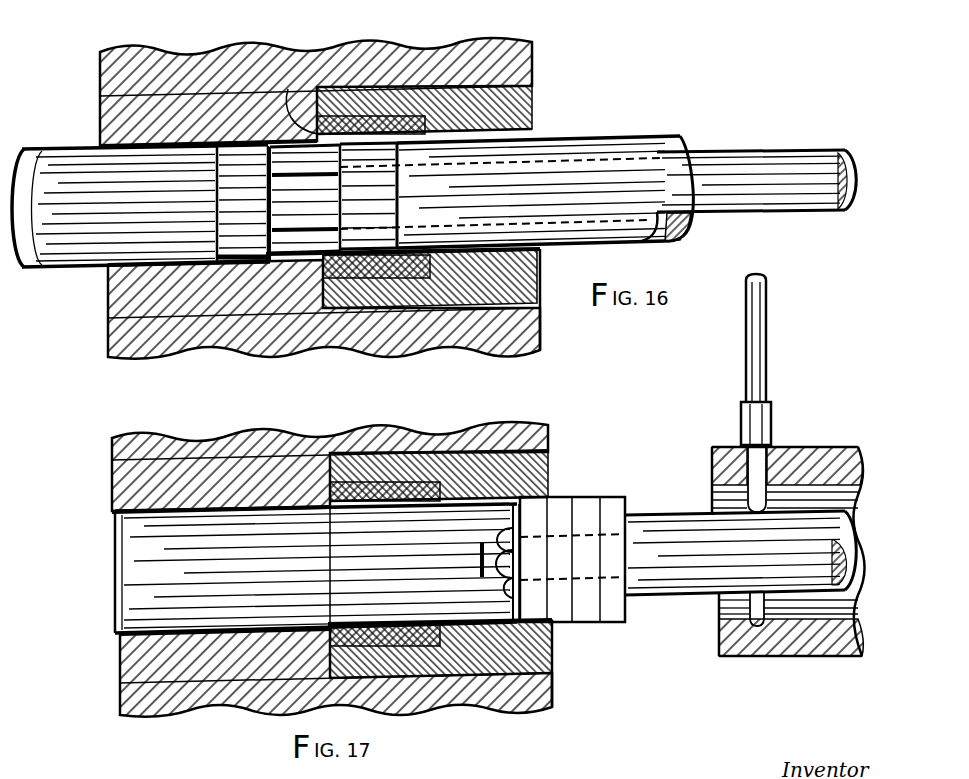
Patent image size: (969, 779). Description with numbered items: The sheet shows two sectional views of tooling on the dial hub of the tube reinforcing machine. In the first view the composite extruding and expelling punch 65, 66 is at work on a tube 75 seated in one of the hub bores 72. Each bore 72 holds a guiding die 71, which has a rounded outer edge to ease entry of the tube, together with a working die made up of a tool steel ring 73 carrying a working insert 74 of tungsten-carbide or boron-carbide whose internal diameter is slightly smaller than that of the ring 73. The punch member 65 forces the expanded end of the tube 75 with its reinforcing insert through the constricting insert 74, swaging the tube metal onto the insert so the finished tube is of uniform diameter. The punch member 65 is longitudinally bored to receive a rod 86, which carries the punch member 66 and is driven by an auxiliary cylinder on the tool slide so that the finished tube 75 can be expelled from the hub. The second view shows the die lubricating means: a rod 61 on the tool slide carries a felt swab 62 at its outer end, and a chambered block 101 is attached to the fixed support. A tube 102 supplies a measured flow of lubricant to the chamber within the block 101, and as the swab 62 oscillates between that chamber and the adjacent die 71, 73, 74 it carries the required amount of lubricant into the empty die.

In FIG. 17, the rod 61 is at (690, 515).
In FIG. 17, the die lubricating swab 62 is at (583, 503).
In FIG. 16, the punch member 65 is at (650, 140).
In FIG. 16, the punch member 66 is at (230, 230).
In FIG. 16, the guiding die 71 is at (236, 92).
In FIG. 17, the guiding die 71 is at (108, 483).
In FIG. 16, the bore 72 is at (421, 87).
In FIG. 17, the bore 72 is at (416, 456).
In FIG. 16, the tool steel ring 73 is at (533, 105).
In FIG. 17, the tool steel ring 73 is at (540, 465).
In FIG. 16, the working insert 74 is at (298, 62).
In FIG. 17, the working insert 74 is at (328, 508).
In FIG. 16, the tube 75 is at (79, 260).
In FIG. 16, the rod 86 is at (757, 201).
In FIG. 17, the chambered block 101 is at (745, 650).
In FIG. 17, the tube 102 is at (767, 332).